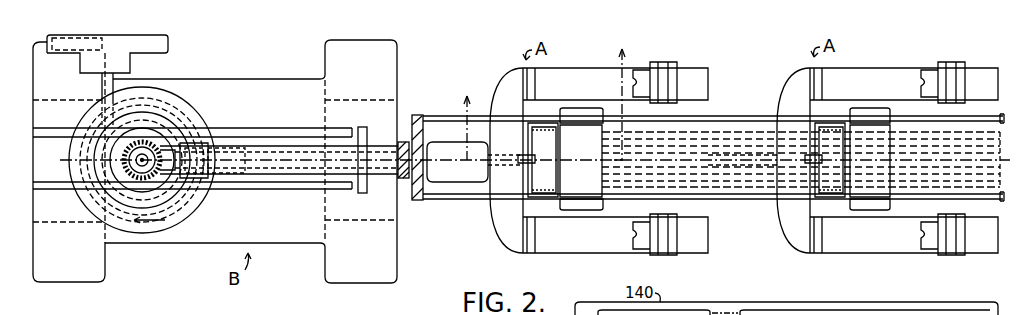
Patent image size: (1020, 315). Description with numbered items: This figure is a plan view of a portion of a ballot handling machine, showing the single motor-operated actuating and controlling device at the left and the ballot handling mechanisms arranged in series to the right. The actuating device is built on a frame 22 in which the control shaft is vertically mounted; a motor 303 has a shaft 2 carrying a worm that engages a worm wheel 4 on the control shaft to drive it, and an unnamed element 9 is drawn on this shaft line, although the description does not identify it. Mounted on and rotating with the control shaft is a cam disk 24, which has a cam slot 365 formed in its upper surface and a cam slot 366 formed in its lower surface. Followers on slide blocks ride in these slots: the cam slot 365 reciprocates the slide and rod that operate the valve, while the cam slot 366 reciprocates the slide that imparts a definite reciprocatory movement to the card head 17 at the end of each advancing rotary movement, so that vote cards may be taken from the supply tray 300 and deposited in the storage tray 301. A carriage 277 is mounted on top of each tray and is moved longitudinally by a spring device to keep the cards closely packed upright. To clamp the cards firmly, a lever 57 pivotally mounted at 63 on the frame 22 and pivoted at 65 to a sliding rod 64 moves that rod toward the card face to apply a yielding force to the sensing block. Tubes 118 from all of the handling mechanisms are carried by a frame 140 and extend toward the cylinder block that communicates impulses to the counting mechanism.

The shaft 2 is at (113, 76).
The worm wheel 4 is at (544, 95).
The flange 9 is at (366, 193).
The card head 17 is at (491, 236).
The frame 22 is at (300, 243).
The cam disk 24 is at (175, 233).
The lever 57 is at (430, 180).
The pivot 63 is at (406, 142).
The sliding rod 64 is at (458, 115).
The pivot 65 is at (418, 200).
The tubes 118 is at (752, 132).
The frame 140 is at (760, 199).
The carriage 277 is at (652, 64).
The supply tray 300 is at (613, 67).
The storage tray 301 is at (630, 253).
The motor 303 is at (169, 47).
The cam slot 365 is at (188, 203).
The cam slot 366 is at (180, 104).